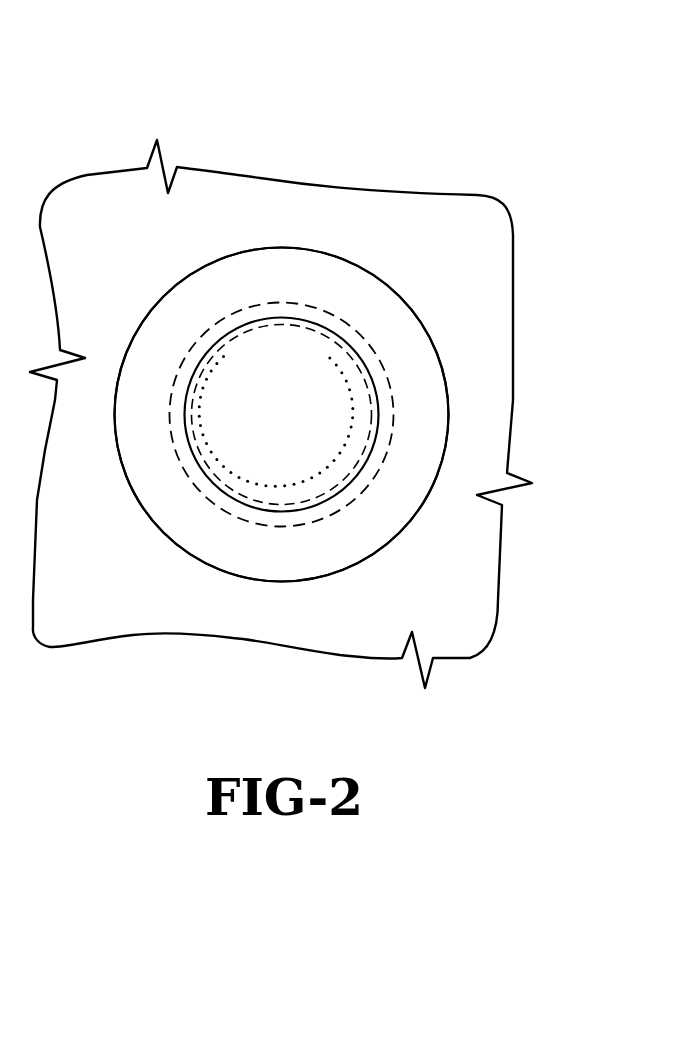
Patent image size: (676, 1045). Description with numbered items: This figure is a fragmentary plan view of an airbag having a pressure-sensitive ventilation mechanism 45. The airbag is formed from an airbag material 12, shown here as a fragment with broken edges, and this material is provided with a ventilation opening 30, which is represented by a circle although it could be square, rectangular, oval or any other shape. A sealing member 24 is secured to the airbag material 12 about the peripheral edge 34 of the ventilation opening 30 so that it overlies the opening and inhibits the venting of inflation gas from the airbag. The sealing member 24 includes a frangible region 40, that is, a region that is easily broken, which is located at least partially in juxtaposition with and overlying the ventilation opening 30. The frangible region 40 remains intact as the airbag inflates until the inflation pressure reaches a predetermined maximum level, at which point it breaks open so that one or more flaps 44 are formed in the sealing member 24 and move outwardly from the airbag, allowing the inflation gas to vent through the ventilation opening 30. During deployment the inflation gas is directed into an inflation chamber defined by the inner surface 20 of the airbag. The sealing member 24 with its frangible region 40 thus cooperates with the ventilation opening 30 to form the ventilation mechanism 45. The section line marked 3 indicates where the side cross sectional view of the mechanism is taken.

The airbag material 12 is at (123, 215).
The pressure-sensitive airbag ventilation mechanism 45 is at (437, 153).
The inner surface 20 is at (464, 259).
The sealing member 24 is at (135, 497).
The peripheral edge 34 is at (369, 341).
The frangible region 40 is at (380, 413).
The flap 44 is at (223, 473).
The ventilation opening 30 is at (272, 503).
The section line 3- 3 is at (279, 225).